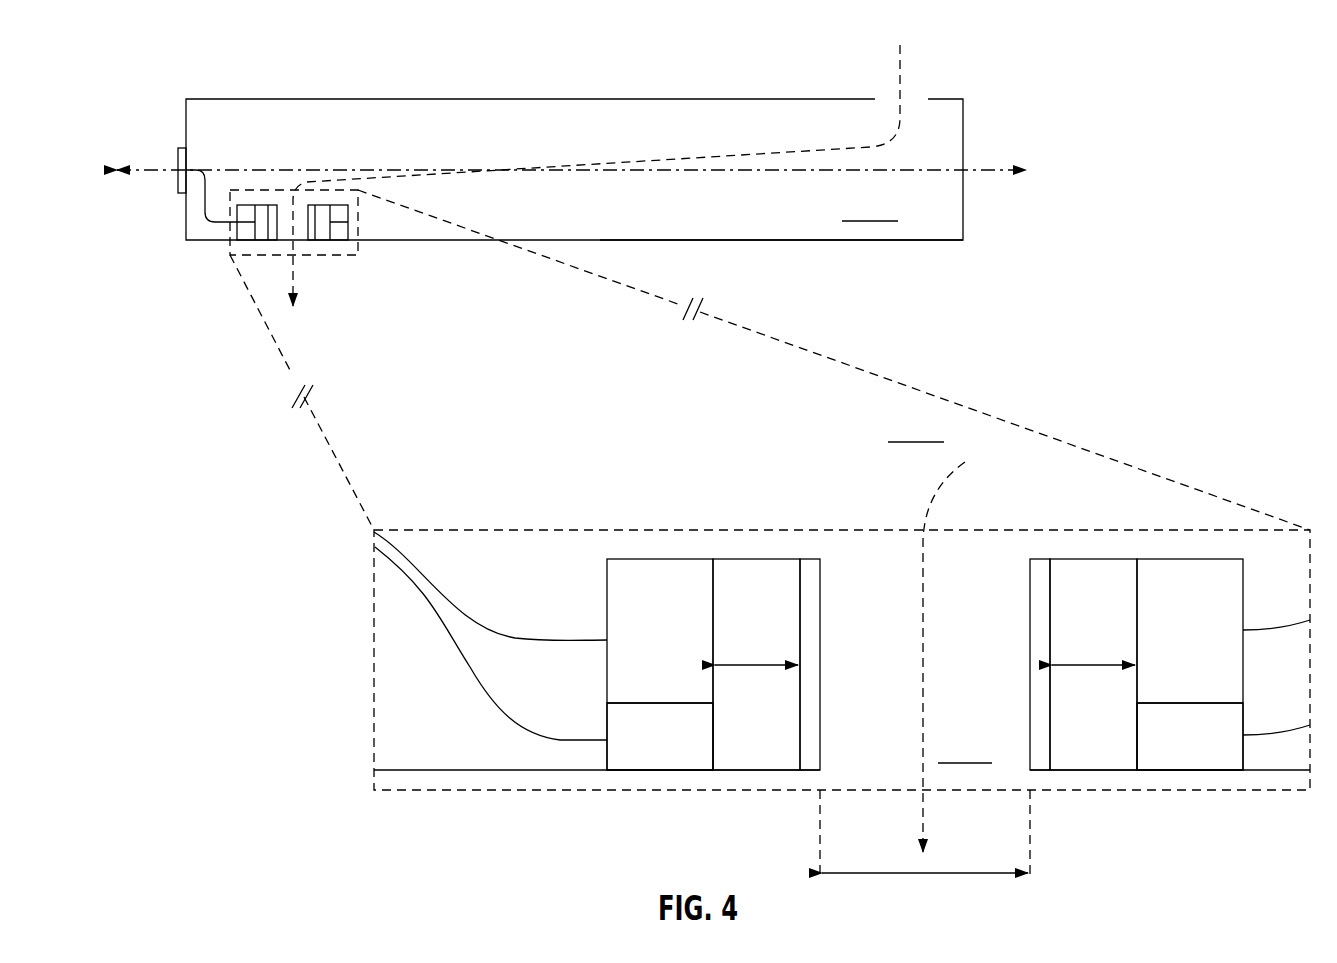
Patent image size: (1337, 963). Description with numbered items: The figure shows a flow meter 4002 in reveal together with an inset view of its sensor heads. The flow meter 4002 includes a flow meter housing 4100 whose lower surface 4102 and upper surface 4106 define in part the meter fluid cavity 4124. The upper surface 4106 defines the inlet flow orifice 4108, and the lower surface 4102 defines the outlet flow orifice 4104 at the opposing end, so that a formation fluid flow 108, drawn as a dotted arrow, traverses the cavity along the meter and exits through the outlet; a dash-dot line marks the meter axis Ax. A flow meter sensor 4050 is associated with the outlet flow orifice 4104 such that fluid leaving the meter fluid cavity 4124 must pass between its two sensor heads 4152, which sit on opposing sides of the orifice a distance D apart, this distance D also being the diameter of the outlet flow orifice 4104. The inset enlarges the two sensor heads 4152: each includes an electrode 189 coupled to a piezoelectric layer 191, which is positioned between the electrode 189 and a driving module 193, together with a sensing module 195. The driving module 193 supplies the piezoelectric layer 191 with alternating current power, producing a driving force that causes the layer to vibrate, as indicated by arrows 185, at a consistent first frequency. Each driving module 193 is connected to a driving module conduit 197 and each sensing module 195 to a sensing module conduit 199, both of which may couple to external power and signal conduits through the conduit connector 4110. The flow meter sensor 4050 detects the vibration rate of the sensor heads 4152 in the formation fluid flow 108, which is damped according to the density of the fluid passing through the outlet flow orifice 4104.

The flow meter 4002 is at (1074, 43).
The flow meter housing 4100 is at (305, 50).
The upper surface 4106 is at (530, 99).
The inlet flow orifice 4108 is at (872, 82).
The conduit connector 4110 is at (178, 163).
The flow meter sensor 4050 is at (178, 226).
The outlet flow orifice 4104 is at (219, 266).
The sensor head 4152 is at (351, 281).
The formation fluid flow 108 is at (905, 62).
The meter fluid cavity 4124 is at (870, 204).
The lower surface 4102 is at (795, 242).
The driving module conduit 197 is at (496, 578).
The sensing module conduit 199 is at (476, 701).
The driving module 193 is at (655, 585).
The piezoelectric layer 191 is at (745, 578).
The electrode 189 is at (810, 568).
The vibration arrows 185 is at (757, 668).
The sensing module 195 is at (655, 748).
The longitudinal axis Ax is at (993, 172).
The distance D is at (925, 874).